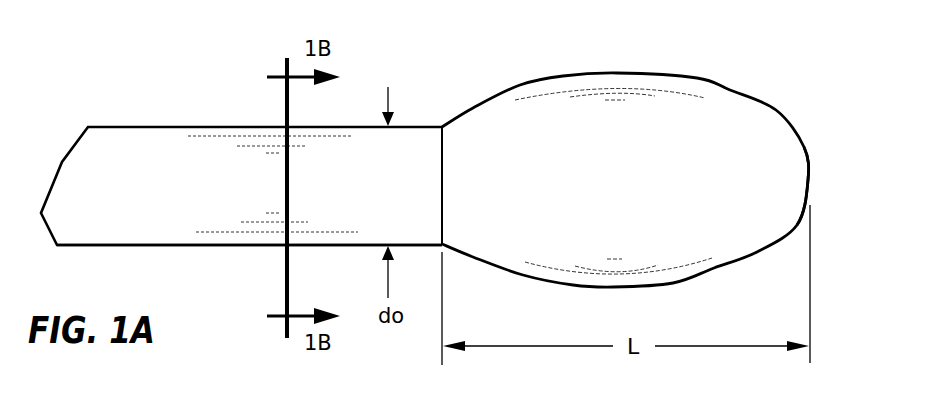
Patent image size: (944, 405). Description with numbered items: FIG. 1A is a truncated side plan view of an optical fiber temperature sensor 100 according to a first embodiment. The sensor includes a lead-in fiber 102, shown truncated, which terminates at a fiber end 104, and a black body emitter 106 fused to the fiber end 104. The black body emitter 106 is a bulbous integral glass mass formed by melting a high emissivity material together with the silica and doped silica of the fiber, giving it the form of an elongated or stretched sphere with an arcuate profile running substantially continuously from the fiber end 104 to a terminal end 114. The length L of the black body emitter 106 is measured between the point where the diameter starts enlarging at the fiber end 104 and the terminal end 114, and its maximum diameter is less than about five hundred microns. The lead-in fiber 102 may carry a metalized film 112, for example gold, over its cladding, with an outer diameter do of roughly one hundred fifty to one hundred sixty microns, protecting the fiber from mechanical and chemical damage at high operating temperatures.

The optical fiber temperature sensor 100 is at (455, 153).
The lead-in fiber 102 is at (177, 112).
The fiber end 104 is at (446, 84).
The black body emitter 106 is at (630, 58).
The metalized film 112 is at (221, 247).
The terminal end 114 is at (808, 176).